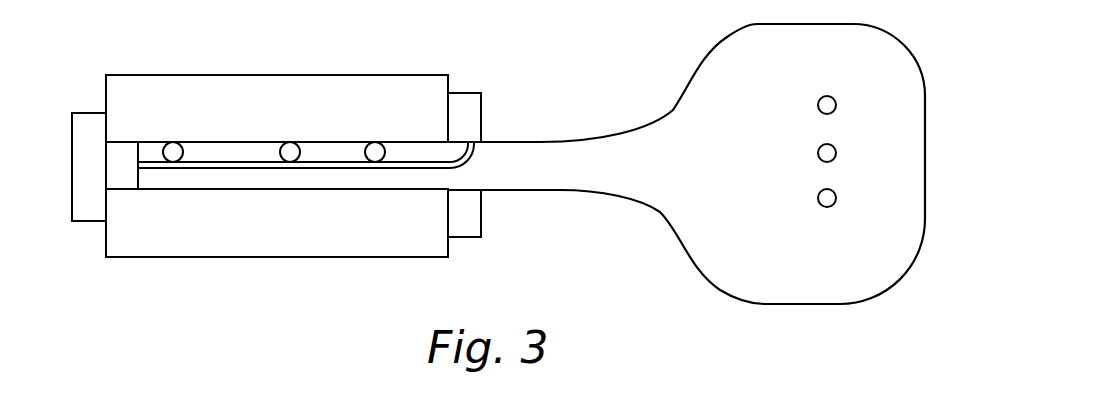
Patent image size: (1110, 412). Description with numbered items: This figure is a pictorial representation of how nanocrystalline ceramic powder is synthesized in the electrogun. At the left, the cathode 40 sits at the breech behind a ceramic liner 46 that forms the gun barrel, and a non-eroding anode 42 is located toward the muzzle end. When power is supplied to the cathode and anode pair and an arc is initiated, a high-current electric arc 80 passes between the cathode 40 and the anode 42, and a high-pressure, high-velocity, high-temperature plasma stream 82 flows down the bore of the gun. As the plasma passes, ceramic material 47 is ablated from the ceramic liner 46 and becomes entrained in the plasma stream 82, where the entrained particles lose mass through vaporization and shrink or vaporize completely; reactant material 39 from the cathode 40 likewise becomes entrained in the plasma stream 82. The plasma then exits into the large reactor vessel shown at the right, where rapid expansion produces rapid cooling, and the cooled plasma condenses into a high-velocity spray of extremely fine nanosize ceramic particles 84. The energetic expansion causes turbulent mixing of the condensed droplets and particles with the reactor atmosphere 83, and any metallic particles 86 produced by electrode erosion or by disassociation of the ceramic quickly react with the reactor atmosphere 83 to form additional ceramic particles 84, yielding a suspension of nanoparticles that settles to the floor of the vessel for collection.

The reactant material 39 is at (185, 142).
The cathode 40 is at (80, 113).
The non-eroding anode 42 is at (483, 118).
The ceramic liner 46 is at (176, 258).
The ceramic material 47 is at (390, 142).
The high-current electric arc 80 is at (410, 168).
The plasma stream 82 is at (226, 178).
The reactor atmosphere 83 is at (558, 50).
The ceramic particles 84 is at (818, 105).
The metallic particles 86 is at (818, 153).